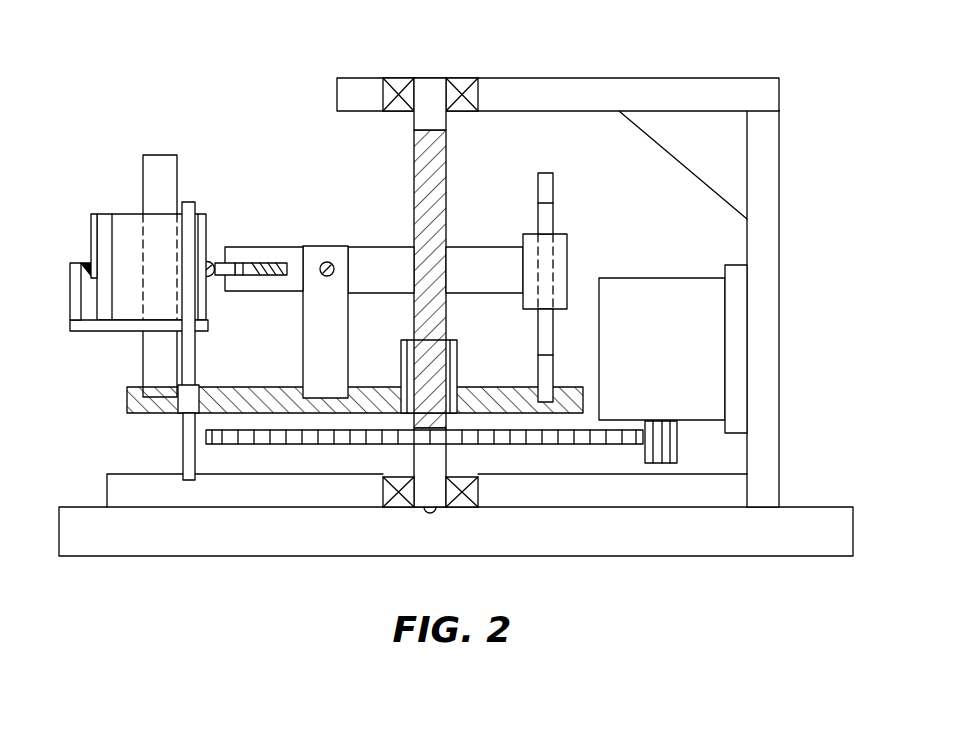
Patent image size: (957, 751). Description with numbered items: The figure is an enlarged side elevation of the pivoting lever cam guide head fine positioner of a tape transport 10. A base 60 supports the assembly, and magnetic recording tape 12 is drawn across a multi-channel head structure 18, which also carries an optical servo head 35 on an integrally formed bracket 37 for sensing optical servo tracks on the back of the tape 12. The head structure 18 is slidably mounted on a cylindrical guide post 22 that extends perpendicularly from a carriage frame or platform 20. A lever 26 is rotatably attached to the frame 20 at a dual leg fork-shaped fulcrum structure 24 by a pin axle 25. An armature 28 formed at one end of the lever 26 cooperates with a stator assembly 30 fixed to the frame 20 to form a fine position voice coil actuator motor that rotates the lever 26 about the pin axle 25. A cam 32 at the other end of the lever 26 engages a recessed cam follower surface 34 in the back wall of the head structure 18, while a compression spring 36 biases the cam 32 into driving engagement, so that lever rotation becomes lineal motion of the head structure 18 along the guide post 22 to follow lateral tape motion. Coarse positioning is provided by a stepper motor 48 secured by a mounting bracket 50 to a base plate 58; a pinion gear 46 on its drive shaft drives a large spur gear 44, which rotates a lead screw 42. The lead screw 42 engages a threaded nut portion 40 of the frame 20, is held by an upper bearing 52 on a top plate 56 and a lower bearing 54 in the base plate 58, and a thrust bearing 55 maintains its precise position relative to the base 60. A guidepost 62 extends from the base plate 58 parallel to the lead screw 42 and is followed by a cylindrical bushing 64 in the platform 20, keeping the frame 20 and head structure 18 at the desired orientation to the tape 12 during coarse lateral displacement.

The tape transport 10 is at (165, 582).
The magnetic recording tape 12 is at (92, 230).
The head structure 18 is at (130, 212).
The frame 20 is at (480, 386).
The guide post 22 is at (143, 355).
The fulcrum structure 24 is at (340, 260).
The pin axle 25 is at (327, 278).
The lever 26 is at (386, 290).
The armature 28 is at (570, 248).
The stator assembly 30 is at (546, 178).
The cam 32 is at (213, 262).
The cam follower surface 34 is at (210, 278).
The optical servo head 35 is at (76, 266).
The compression spring 36 is at (268, 262).
The bracket 37 is at (75, 333).
The threaded nut portion 40 is at (460, 348).
The lead screw 42 is at (440, 216).
The spur gear 44 is at (236, 450).
The pinion gear 46 is at (678, 438).
The stepper motor 48 is at (645, 292).
The mounting bracket 50 is at (730, 268).
The upper bearing 52 is at (404, 80).
The lower bearing 54 is at (396, 508).
The thrust bearing 55 is at (436, 510).
The top plate 56 is at (700, 88).
The base plate 58 is at (782, 280).
The base 60 is at (826, 505).
The guidepost 62 is at (196, 355).
The cylindrical bushing 64 is at (182, 440).